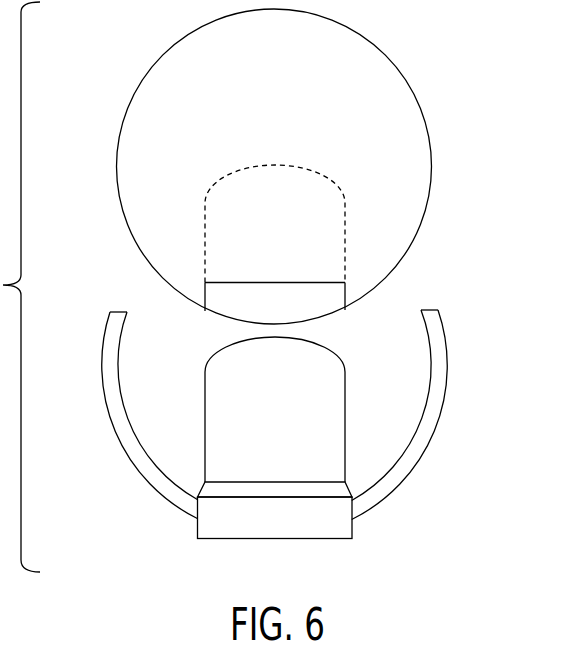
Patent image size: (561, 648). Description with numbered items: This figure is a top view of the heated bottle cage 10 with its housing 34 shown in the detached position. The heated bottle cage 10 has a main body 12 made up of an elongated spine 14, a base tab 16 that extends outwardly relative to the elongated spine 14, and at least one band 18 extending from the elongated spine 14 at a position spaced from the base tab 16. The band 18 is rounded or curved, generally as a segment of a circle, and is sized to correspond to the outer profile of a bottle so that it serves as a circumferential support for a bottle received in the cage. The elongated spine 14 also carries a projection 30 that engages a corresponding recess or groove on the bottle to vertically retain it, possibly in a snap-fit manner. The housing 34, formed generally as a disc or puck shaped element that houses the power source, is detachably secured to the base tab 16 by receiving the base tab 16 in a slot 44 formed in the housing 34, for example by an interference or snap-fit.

The heated bottle cage 10 is at (77, 177).
The main body 12 is at (356, 543).
The elongated spine 14 is at (282, 523).
The base tab 16 is at (325, 388).
The band 18 is at (438, 373).
The projection 30 is at (317, 492).
The housing 34 is at (432, 152).
The slot 44 is at (312, 283).